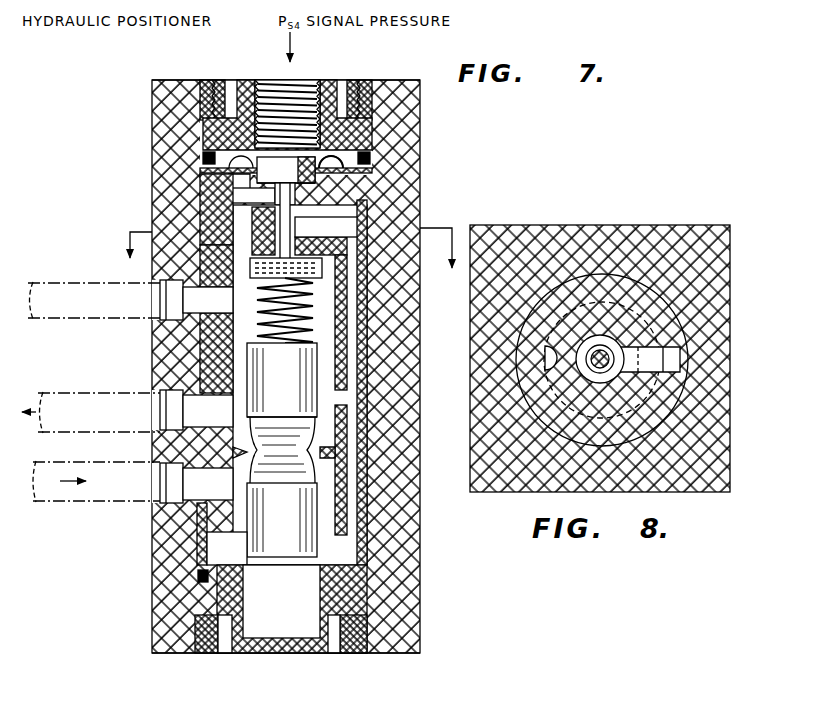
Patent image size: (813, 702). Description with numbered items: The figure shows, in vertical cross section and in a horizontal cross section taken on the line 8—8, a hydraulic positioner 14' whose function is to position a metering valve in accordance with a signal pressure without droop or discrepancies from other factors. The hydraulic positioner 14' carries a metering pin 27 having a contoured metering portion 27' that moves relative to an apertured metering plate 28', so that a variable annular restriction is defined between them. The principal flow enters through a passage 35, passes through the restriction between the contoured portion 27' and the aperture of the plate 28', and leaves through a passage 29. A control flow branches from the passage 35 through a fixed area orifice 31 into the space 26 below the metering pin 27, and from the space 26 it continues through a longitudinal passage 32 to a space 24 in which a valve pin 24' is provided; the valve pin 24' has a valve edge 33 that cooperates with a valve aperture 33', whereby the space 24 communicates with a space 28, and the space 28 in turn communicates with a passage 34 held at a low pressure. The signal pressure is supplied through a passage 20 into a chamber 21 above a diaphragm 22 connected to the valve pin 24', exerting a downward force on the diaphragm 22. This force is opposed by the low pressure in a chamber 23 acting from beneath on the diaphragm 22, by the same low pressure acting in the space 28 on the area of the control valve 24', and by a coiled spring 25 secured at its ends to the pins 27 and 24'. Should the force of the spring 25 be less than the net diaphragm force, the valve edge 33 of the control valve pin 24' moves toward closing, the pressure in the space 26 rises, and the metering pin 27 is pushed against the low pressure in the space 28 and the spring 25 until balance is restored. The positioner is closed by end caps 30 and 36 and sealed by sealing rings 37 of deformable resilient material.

In FIG. 7, the hydraulic positioner 14' is at (249, 361).
In FIG. 8, the hydraulic positioner 14' is at (621, 324).
In FIG. 7, the passage 20 is at (302, 96).
In FIG. 7, the chamber 21 is at (338, 160).
In FIG. 7, the diaphragm 22 is at (310, 170).
In FIG. 7, the chamber 23 is at (305, 184).
In FIG. 7, the space 24 is at (354, 230).
In FIG. 8, the space 24 is at (620, 282).
In FIG. 7, the valve pin 24' is at (295, 231).
In FIG. 8, the valve pin 24' is at (684, 392).
In FIG. 7, the coiled spring 25 is at (312, 312).
In FIG. 7, the space 26 is at (347, 553).
In FIG. 7, the metering pin 27 is at (347, 509).
In FIG. 7, the contoured metering portion 27' is at (350, 446).
In FIG. 7, the space 28 is at (321, 369).
In FIG. 8, the space 28 is at (602, 306).
In FIG. 7, the apertured metering plate 28' is at (352, 399).
In FIG. 7, the passage 29 is at (185, 410).
In FIG. 7, the end cap 30 is at (247, 84).
In FIG. 7, the fixed area orifice 31 is at (208, 548).
In FIG. 7, the longitudinal passage 32 is at (352, 394).
In FIG. 8, the longitudinal passage 32 is at (678, 360).
In FIG. 7, the valve edge 33 is at (193, 188).
In FIG. 7, the valve aperture 33' is at (327, 176).
In FIG. 7, the passage 34 is at (170, 302).
In FIG. 7, the passage 35 is at (150, 498).
In FIG. 7, the end cap 36 is at (242, 655).
In FIG. 7, the sealing rings 37 is at (205, 157).
In FIG. 7, the section line 8— 8 is at (282, 248).